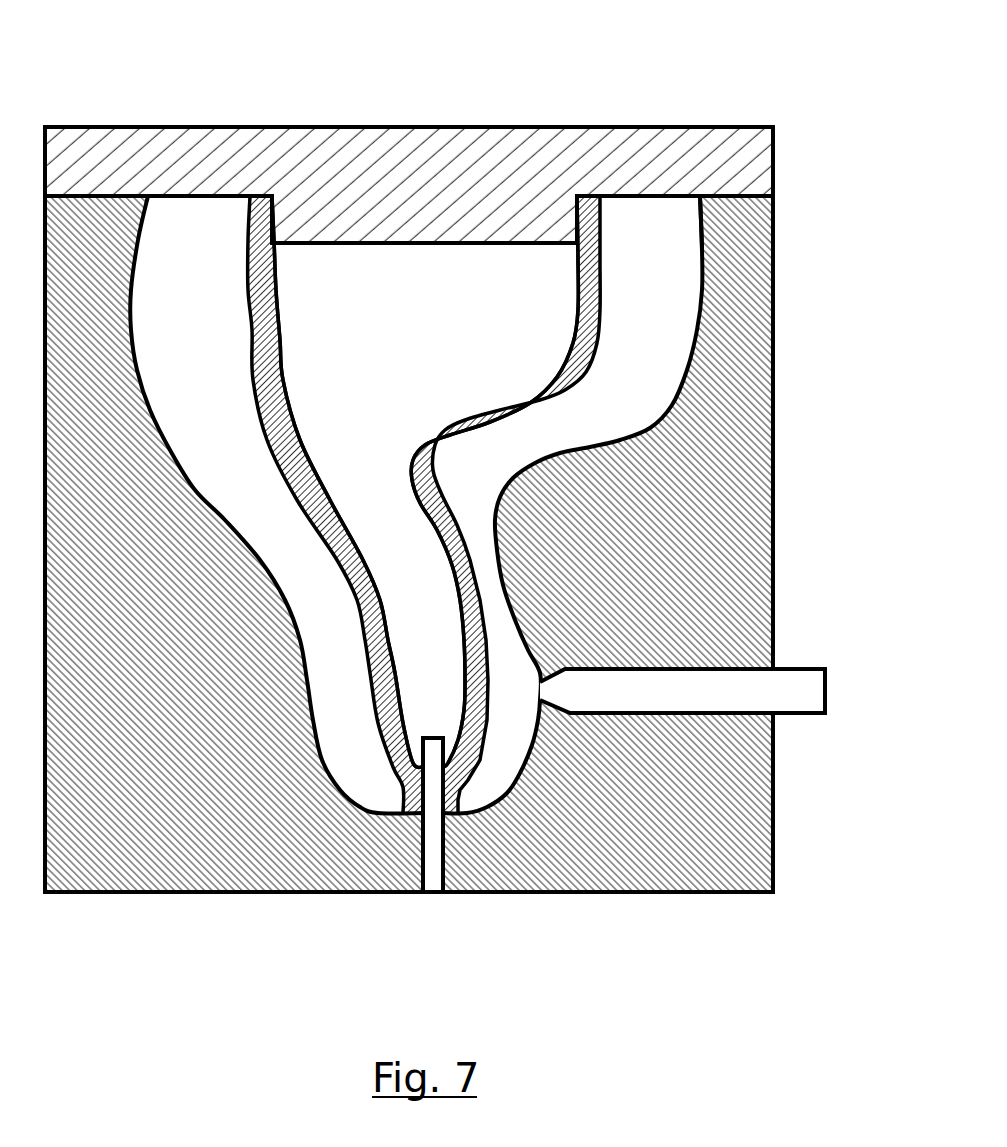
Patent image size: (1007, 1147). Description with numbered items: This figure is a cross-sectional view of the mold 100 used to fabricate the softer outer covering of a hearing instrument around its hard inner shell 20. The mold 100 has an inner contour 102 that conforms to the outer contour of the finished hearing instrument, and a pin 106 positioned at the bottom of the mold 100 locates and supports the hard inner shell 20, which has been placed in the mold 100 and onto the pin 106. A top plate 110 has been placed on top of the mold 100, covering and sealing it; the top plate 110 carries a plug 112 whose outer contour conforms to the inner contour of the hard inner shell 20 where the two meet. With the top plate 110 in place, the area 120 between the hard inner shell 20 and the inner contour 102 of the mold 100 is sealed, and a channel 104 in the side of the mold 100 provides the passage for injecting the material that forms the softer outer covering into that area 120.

The hard inner shell 20 is at (560, 400).
The mold 100 is at (83, 863).
The inner contour 102 is at (698, 328).
The channel 104 is at (650, 688).
The pin 106 is at (428, 893).
The top plate 110 is at (440, 155).
The plug 112 is at (348, 208).
The area 120 is at (202, 350).